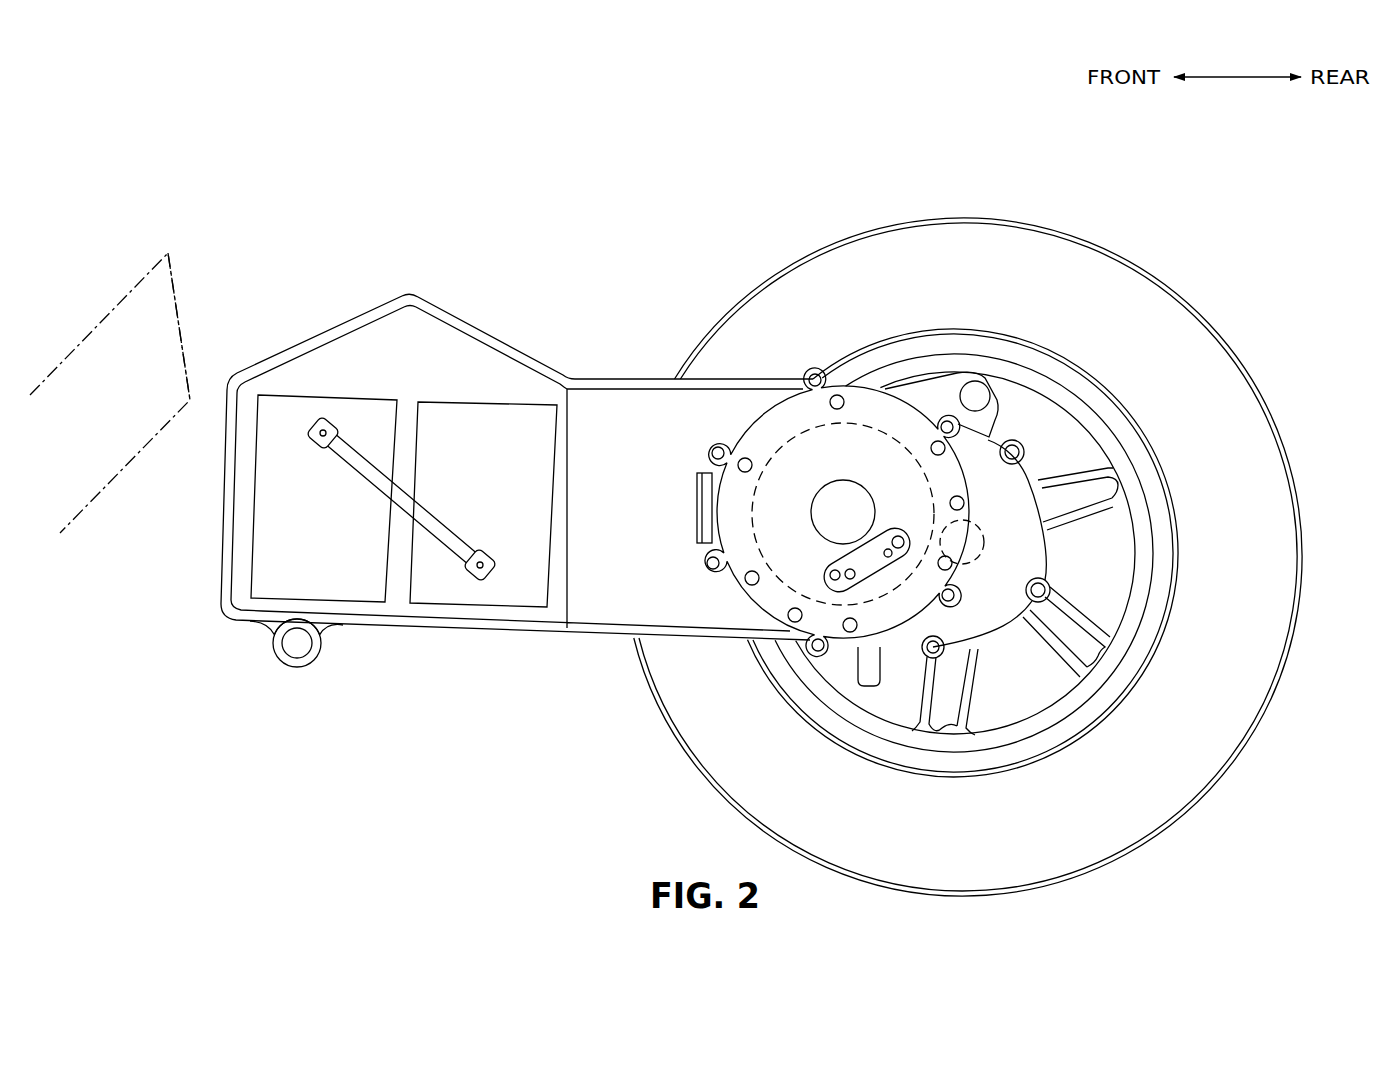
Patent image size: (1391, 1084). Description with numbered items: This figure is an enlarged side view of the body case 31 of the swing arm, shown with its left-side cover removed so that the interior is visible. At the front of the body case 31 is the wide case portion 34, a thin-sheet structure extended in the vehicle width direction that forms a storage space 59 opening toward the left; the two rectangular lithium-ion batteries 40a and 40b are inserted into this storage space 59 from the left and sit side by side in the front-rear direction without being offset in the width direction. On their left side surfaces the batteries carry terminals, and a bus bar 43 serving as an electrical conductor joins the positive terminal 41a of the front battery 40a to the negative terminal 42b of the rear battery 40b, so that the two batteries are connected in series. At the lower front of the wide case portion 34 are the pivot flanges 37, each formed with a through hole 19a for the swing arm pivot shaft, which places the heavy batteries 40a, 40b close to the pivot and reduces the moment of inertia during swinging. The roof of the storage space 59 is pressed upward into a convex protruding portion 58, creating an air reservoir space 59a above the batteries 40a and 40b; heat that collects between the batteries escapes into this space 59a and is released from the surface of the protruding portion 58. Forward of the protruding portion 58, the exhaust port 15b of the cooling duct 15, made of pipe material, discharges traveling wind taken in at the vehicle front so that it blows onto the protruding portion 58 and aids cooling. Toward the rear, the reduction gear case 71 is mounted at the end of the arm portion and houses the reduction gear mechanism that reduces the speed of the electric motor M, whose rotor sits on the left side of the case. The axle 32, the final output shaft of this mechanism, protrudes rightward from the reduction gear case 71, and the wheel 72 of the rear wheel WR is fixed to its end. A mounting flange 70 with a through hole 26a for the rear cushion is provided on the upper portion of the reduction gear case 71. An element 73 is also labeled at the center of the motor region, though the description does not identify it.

The cooling duct 15 is at (90, 328).
The exhaust port 15b is at (177, 298).
The body case 31 is at (616, 276).
The wide case portion 34 is at (352, 316).
The protruding portion 58 is at (308, 342).
The storage space 59 is at (241, 467).
The air reservoir space 59a is at (397, 354).
The battery 40a is at (258, 547).
The battery 40b is at (428, 590).
The positive terminal 41a is at (320, 426).
The negative terminal 42b is at (478, 582).
The bus bar 43 is at (373, 485).
The pivot flange 37 is at (273, 623).
The through hole 19a is at (297, 648).
The rear wheel WR is at (1128, 812).
The wheel 72 is at (1110, 663).
The reduction gear case 71 is at (1037, 547).
The electric motor M is at (803, 430).
The motor output shaft 73 is at (845, 503).
The mounting flange 70 is at (947, 393).
The through hole 26a is at (979, 394).
The axle 32 is at (975, 560).